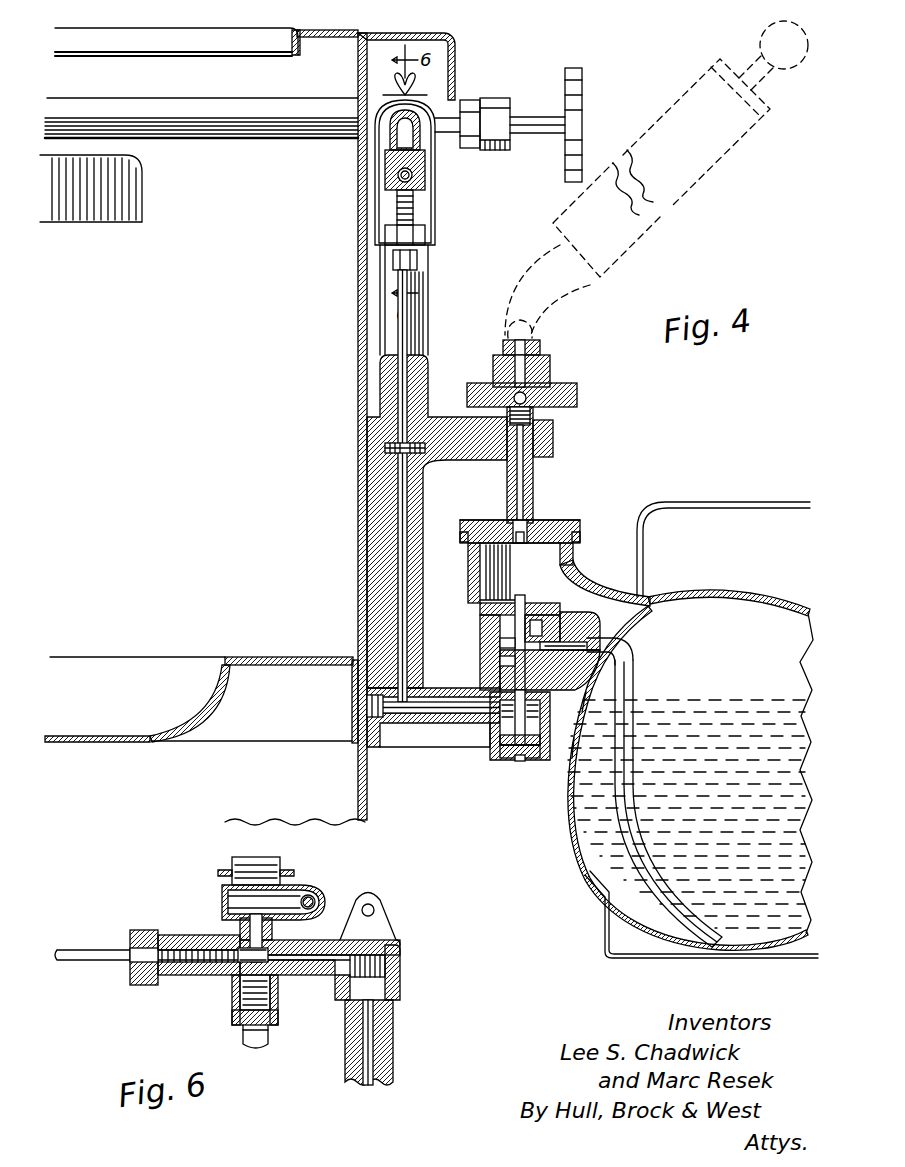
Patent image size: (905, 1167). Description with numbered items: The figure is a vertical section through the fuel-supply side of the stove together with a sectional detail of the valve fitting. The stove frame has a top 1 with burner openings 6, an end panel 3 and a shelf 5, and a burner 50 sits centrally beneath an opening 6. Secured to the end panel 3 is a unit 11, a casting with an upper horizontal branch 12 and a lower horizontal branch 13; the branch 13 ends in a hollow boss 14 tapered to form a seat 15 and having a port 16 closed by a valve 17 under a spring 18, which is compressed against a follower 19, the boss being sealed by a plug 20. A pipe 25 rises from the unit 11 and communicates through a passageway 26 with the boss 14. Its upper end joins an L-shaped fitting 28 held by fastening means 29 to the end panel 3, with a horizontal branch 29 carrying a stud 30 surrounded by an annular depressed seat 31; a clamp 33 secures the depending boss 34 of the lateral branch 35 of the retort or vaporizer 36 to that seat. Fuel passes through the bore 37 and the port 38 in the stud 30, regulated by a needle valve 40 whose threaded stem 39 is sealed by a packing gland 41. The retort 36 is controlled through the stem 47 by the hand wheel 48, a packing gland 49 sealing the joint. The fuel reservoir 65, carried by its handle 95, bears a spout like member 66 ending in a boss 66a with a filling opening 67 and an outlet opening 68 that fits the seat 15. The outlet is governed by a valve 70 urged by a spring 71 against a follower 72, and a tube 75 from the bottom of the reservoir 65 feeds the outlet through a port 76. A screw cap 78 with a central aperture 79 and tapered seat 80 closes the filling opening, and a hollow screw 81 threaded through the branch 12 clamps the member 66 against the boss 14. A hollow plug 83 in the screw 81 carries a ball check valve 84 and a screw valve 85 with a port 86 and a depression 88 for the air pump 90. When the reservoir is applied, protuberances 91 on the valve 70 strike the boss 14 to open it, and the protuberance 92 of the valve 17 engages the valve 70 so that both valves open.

In FIG. 4, the top 1 is at (397, 32).
In FIG. 4, the end panel 3 is at (358, 363).
In FIG. 4, the shelf 5 is at (260, 657).
In FIG. 4, the burner openings 6 is at (260, 41).
In FIG. 4, the unit 11 is at (423, 500).
In FIG. 4, the upper horizontal branch 12 is at (553, 438).
In FIG. 4, the lower horizontal branch 13 is at (475, 728).
In FIG. 4, the hollow boss 14 is at (485, 748).
In FIG. 4, the seat 15 is at (584, 702).
In FIG. 4, the port 16 is at (490, 670).
In FIG. 4, the valve 17 is at (490, 687).
In FIG. 4, the spring 18 is at (576, 746).
In FIG. 4, the follower 19 is at (536, 760).
In FIG. 4, the plug 20 is at (540, 763).
In FIG. 4, the pipe 25 is at (428, 300).
In FIG. 6, the pipe 25 is at (393, 1030).
In FIG. 4, the passageway 26 is at (407, 590).
In FIG. 6, the fitting 28 is at (400, 958).
In FIG. 6, the fastening means / horizontal branch 29 is at (200, 975).
In FIG. 6, the stud 30 is at (235, 930).
In FIG. 6, the annular depressed seat 31 is at (272, 934).
In FIG. 4, the clamp 33 is at (377, 213).
In FIG. 6, the clamp 33 is at (280, 1005).
In FIG. 6, the depending boss 34 is at (248, 914).
In FIG. 4, the lateral branch 35 is at (378, 135).
In FIG. 6, the lateral branch 35 is at (285, 887).
In FIG. 4, the retort or vaporizer 36 is at (215, 98).
In FIG. 6, the retort or vaporizer 36 is at (318, 896).
In FIG. 6, the bore 37 is at (336, 940).
In FIG. 6, the port 38 is at (236, 966).
In FIG. 4, the threaded stem 39 is at (412, 180).
In FIG. 6, the threaded stem 39 is at (185, 935).
In FIG. 6, the needle valve 40 is at (280, 990).
In FIG. 6, the packing gland 41 is at (135, 930).
In FIG. 4, the stem 47 is at (532, 117).
In FIG. 4, the hand wheel 48 is at (582, 80).
In FIG. 4, the packing gland 49 is at (492, 150).
In FIG. 4, the burner 50 is at (135, 183).
In FIG. 4, the fuel reservoir 65 is at (578, 858).
In FIG. 4, the spout like member 66 is at (608, 578).
In FIG. 4, the boss 66a is at (468, 568).
In FIG. 4, the filling opening 67 is at (565, 533).
In FIG. 4, the outlet opening 68 is at (606, 642).
In FIG. 4, the valve 70 is at (542, 640).
In FIG. 4, the spring 71 is at (540, 616).
In FIG. 4, the follower 72 is at (508, 603).
In FIG. 4, the tube 75 is at (634, 676).
In FIG. 4, the port 76 is at (586, 642).
In FIG. 4, the screw cap 78 is at (494, 526).
In FIG. 4, the central aperture 79 is at (548, 522).
In FIG. 4, the tapered seat 80 is at (513, 528).
In FIG. 4, the hollow screw 81 is at (533, 470).
In FIG. 4, the hollow plug 83 is at (550, 378).
In FIG. 4, the ball check valve 84 is at (577, 400).
In FIG. 4, the screw valve 85 is at (540, 348).
In FIG. 4, the port 86 is at (505, 352).
In FIG. 4, the depression 88 is at (528, 335).
In FIG. 4, the air pump 90 is at (700, 176).
In FIG. 4, the protuberances 91 is at (503, 647).
In FIG. 4, the protuberance 92 is at (503, 661).
In FIG. 4, the handle 95 is at (746, 502).